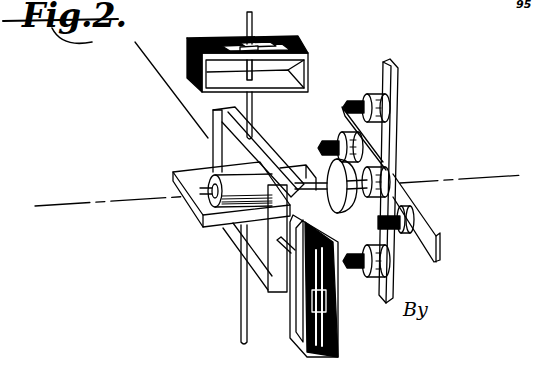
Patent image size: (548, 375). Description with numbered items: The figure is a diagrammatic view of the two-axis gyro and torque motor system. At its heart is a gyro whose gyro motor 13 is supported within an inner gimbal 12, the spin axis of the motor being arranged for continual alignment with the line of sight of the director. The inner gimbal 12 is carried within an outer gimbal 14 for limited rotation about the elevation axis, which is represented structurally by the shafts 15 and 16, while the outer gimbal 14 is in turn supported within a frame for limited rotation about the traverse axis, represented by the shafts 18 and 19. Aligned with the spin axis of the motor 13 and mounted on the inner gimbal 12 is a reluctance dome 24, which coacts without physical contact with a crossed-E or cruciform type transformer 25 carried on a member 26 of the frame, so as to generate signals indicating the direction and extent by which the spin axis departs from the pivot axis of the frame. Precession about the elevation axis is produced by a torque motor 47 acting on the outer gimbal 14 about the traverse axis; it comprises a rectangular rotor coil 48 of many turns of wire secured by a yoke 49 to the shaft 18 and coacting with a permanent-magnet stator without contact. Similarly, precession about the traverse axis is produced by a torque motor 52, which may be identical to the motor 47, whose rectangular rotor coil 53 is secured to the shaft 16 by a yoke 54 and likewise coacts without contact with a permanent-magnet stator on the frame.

The inner gimbal 12 is at (197, 212).
The gyro motor 13 is at (216, 171).
The outer gimbal 14 is at (257, 153).
The shaft 15 is at (226, 150).
The shaft 16 is at (284, 250).
The shaft 18 is at (253, 108).
The shaft 19 is at (240, 295).
The reluctance dome 24 is at (331, 192).
The crossed-E or cruciform type transformer 25 is at (402, 175).
The member 26 is at (398, 131).
The torque motor 47 is at (320, 72).
The rectangular rotor coil 48 is at (292, 43).
The yoke 49 is at (257, 46).
The torque motor 52 is at (285, 318).
The rectangular rotor coil 53 is at (340, 347).
The yoke 54 is at (368, 358).